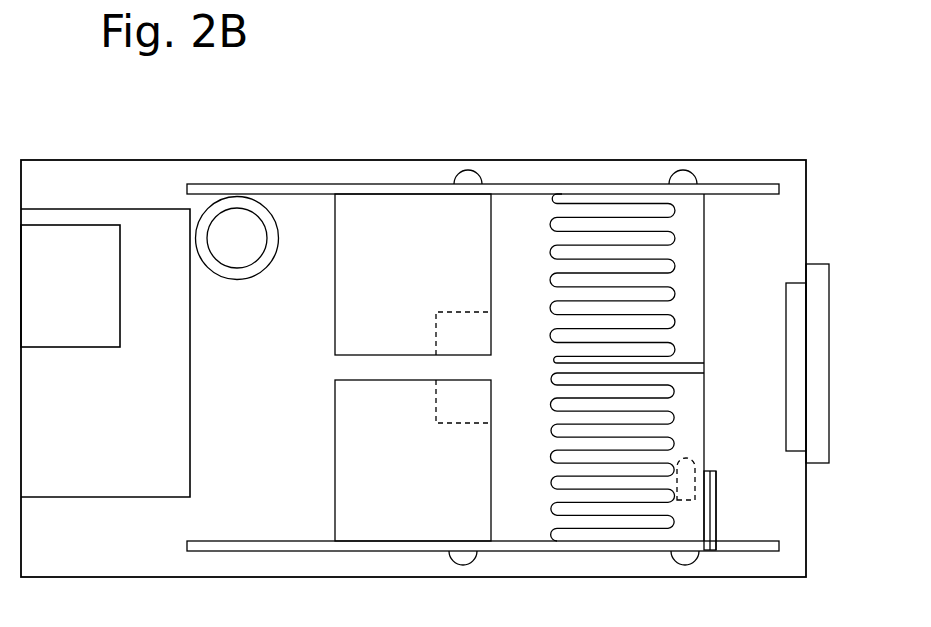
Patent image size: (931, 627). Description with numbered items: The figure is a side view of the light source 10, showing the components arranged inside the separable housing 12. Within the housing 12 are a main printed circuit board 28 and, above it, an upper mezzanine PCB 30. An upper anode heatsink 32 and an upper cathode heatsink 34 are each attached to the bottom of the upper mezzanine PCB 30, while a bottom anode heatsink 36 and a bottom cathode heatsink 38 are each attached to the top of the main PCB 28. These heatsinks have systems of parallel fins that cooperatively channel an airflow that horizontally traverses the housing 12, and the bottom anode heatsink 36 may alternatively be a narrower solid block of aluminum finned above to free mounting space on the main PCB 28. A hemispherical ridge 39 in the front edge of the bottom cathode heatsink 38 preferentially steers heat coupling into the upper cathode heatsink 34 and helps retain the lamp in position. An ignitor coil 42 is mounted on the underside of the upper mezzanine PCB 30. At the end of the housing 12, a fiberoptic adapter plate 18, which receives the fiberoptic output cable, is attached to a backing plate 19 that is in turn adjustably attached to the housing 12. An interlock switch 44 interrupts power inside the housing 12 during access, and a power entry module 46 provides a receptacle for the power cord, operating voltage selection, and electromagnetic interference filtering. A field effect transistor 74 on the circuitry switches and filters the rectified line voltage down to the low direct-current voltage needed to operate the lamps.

The light source 10 is at (487, 125).
The separable housing 12 is at (806, 224).
The fiberoptic adapter plate 18 is at (829, 358).
The backing plate 19 is at (787, 282).
The main printed circuit board 28 is at (252, 542).
The upper mezzanine PCB 30 is at (305, 196).
The upper anode heatsink 32 is at (396, 267).
The upper cathode heatsink 34 is at (705, 217).
The bottom anode heatsink 36 is at (398, 476).
The bottom cathode heatsink 38 is at (706, 453).
The hemispherical ridge 39 is at (695, 493).
The ignitor coil 42 is at (234, 252).
The interlock switch 44 is at (63, 239).
The power entry module 46 is at (90, 426).
The field effect transistor 74 is at (712, 523).